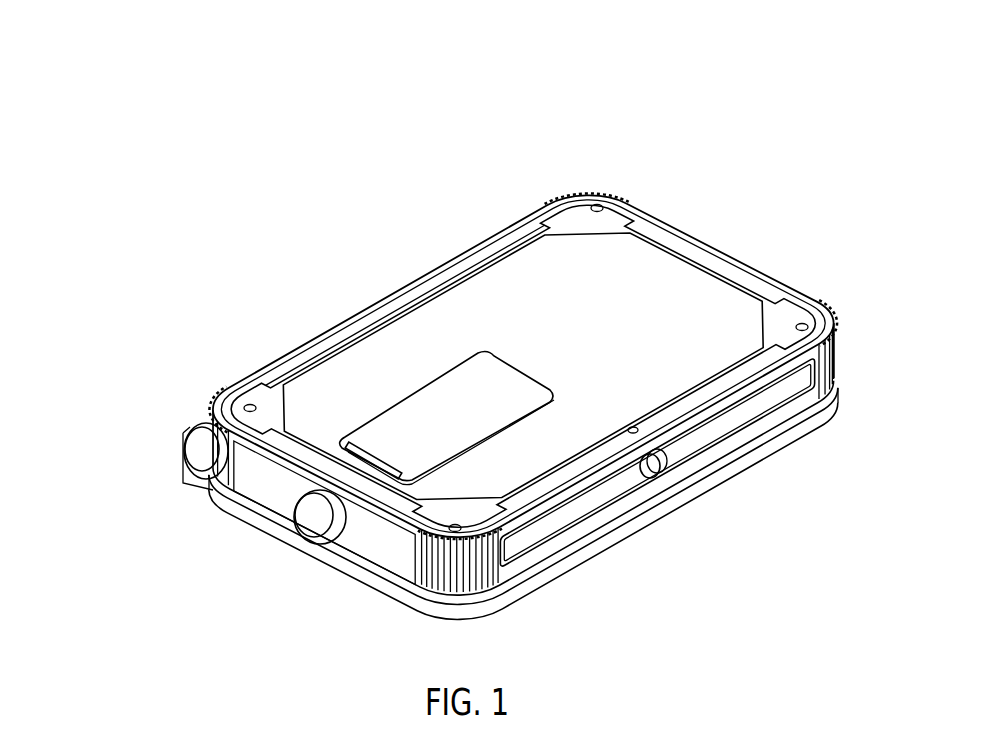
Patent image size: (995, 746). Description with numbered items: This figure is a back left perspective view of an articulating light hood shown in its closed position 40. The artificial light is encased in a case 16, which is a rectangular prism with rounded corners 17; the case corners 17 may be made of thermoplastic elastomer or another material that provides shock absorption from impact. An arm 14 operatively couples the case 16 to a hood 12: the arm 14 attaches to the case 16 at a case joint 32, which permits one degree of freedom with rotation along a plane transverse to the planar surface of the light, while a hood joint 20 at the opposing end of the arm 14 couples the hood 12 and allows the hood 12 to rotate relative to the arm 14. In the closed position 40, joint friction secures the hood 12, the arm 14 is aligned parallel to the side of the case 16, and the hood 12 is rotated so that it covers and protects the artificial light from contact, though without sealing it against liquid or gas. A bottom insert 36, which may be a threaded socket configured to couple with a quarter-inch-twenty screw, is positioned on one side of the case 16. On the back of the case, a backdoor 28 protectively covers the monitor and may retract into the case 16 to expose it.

The hood 12 is at (480, 617).
The arm 14 is at (257, 484).
The case 16 is at (503, 550).
The rounded corners 17 is at (832, 347).
The hood joint 20 is at (202, 451).
The backdoor 28 is at (447, 396).
The case joint 32 is at (314, 517).
The bottom insert 36 is at (665, 462).
The closed position 40 is at (437, 216).